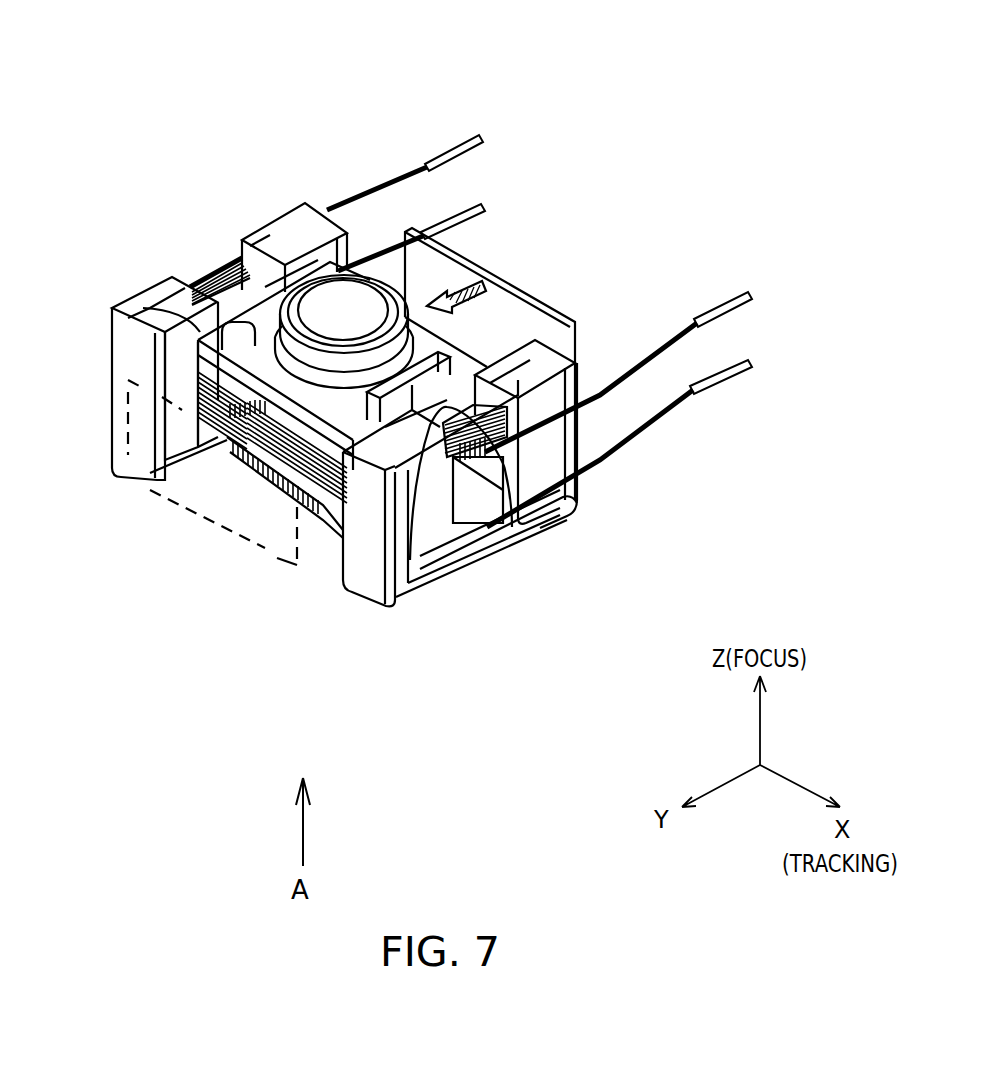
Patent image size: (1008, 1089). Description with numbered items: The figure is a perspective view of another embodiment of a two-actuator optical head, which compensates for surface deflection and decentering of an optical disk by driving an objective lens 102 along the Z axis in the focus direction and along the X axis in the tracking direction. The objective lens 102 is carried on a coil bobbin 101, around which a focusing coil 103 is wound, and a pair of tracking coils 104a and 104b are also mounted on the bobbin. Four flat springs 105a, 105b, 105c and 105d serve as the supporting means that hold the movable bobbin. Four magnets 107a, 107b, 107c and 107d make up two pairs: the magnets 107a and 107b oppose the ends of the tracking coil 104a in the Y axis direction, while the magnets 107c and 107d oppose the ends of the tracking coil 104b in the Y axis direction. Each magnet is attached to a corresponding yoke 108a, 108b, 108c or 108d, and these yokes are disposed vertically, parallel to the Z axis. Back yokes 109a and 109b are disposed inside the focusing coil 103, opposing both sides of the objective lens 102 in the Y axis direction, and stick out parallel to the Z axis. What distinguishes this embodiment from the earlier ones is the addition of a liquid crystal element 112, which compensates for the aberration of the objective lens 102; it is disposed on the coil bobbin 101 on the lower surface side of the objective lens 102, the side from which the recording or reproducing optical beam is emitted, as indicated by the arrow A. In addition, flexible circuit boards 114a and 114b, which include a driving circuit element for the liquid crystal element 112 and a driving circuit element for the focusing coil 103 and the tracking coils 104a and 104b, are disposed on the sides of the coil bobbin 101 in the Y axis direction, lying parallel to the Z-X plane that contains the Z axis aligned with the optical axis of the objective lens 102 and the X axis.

The coil bobbin 101 is at (110, 311).
The objective lens 102 is at (337, 302).
The focusing coil 103 is at (280, 487).
The tracking coil 104a is at (413, 525).
The tracking coil 104b is at (212, 243).
The flat spring 105a is at (683, 348).
The flat spring 105b is at (612, 457).
The flat spring 105c is at (463, 207).
The flat spring 105d is at (383, 197).
The magnet 107a is at (512, 360).
The magnet 107b is at (423, 527).
The magnet 107c is at (163, 289).
The magnet 107d is at (257, 237).
The yoke 108a is at (580, 425).
The yoke 108b is at (362, 565).
The yoke 108c is at (120, 352).
The yoke 108d is at (365, 220).
The back yoke 109a is at (520, 533).
The back yoke 109b is at (233, 257).
The liquid crystal element 112 is at (250, 468).
The flexible circuit board 114a is at (500, 306).
The flexible circuit board 114b is at (165, 485).